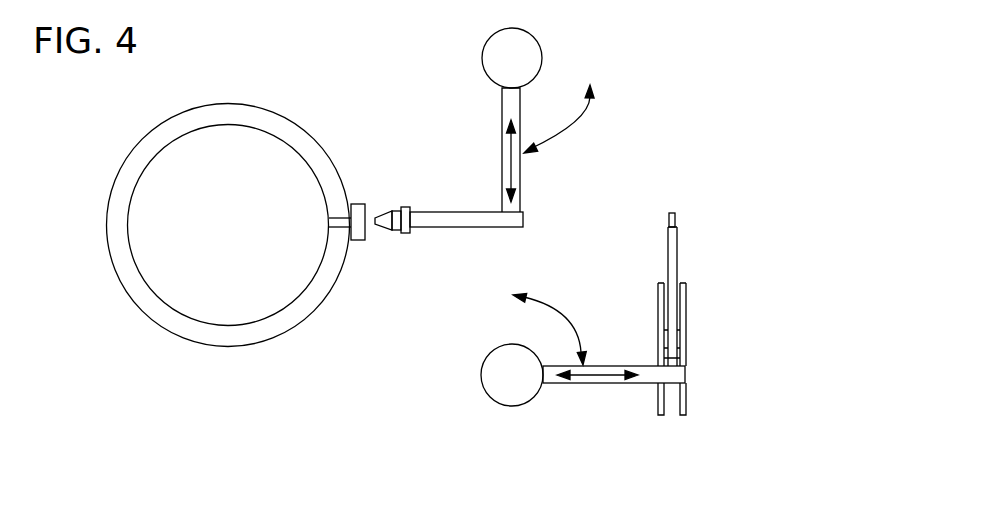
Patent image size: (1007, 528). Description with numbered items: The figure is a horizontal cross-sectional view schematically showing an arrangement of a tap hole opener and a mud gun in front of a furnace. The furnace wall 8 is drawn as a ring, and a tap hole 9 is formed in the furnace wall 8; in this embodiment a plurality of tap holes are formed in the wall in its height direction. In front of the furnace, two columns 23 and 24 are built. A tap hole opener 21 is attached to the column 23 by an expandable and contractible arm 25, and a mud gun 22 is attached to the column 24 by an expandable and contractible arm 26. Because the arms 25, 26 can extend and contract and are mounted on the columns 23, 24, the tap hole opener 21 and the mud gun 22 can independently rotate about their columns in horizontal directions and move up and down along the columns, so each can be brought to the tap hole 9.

The furnace wall 8 is at (236, 103).
The tap hole 9 is at (365, 233).
The tap hole opener 21 is at (677, 234).
The mud gun 22 is at (447, 228).
The column 23 is at (486, 357).
The column 24 is at (482, 56).
The expandable and contractible arm 25 is at (596, 384).
The expandable and contractible arm 26 is at (502, 157).